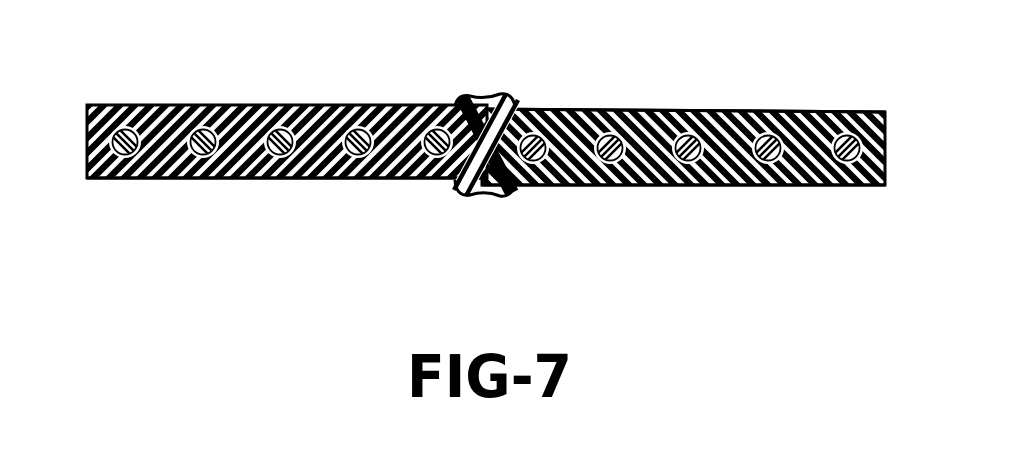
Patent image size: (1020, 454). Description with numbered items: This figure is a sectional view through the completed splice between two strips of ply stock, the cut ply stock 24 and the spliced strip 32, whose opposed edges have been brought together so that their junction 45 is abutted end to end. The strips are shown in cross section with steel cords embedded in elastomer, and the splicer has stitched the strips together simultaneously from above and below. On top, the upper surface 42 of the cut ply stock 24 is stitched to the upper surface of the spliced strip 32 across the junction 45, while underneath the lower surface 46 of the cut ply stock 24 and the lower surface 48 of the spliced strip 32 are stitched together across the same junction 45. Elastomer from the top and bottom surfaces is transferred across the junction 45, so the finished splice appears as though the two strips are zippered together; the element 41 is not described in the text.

The cut ply stock 24 is at (814, 110).
The spliced strip 32 is at (305, 105).
The first cable segment 41 is at (238, 105).
The upper surface of strip 24 42 is at (670, 109).
The junction 45 is at (433, 107).
The lower surface of strip 24 46 is at (598, 185).
The lower surface of strip 32 48 is at (388, 180).